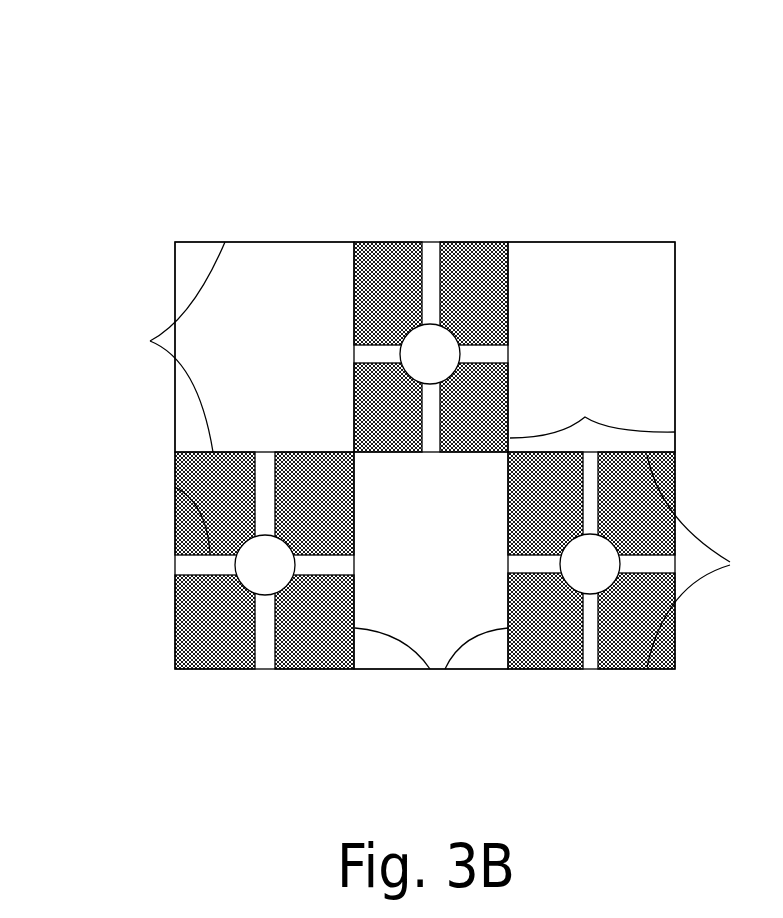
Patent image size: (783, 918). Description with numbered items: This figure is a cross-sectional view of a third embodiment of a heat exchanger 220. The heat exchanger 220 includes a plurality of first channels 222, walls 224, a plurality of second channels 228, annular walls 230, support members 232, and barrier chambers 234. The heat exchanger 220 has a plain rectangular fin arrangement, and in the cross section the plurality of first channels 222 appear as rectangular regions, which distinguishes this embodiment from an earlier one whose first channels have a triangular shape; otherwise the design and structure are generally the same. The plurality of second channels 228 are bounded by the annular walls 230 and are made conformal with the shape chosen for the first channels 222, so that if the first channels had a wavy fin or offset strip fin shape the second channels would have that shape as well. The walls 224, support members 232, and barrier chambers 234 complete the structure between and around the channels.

The heat exchanger 220 is at (465, 344).
The plurality of first channels 222 is at (288, 362).
The walls 224 is at (150, 341).
The plurality of second channels 228 is at (453, 363).
The annular walls 230 is at (245, 592).
The support members 232 is at (253, 460).
The barrier chambers 234 is at (467, 262).